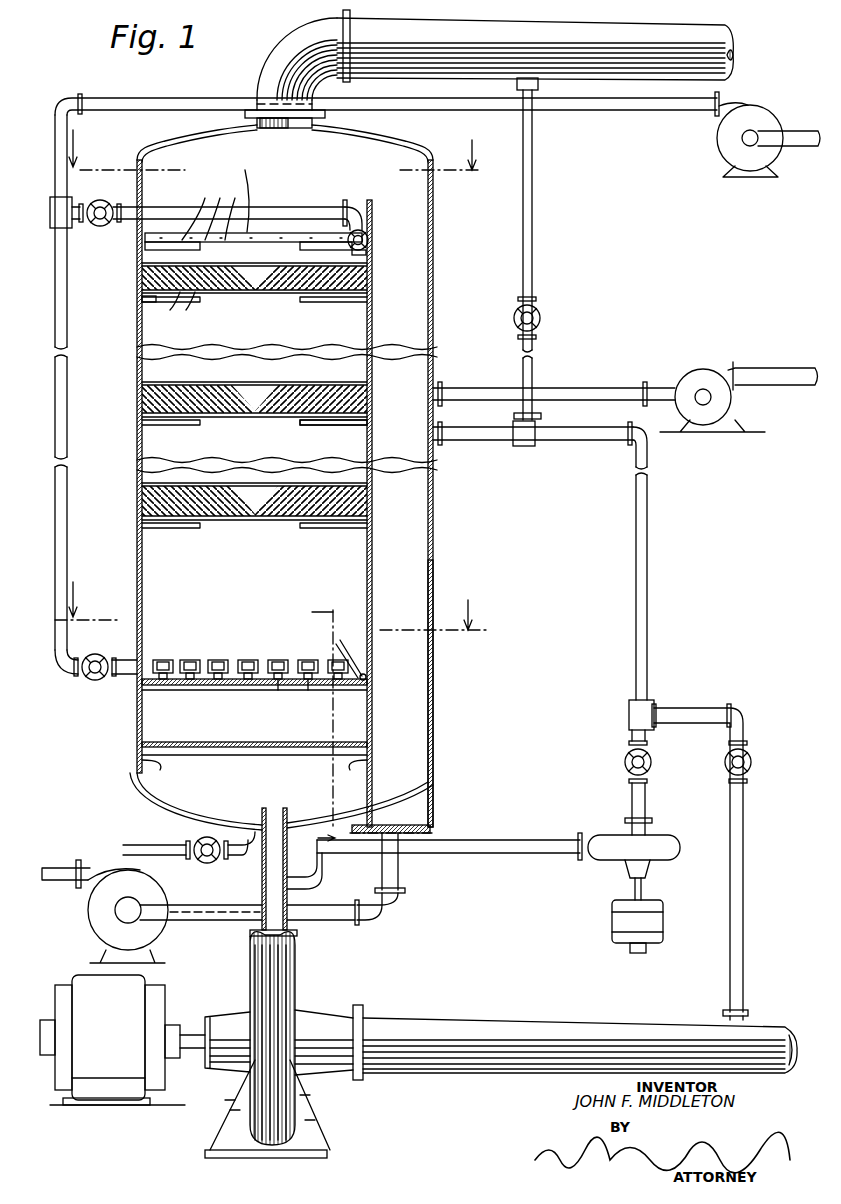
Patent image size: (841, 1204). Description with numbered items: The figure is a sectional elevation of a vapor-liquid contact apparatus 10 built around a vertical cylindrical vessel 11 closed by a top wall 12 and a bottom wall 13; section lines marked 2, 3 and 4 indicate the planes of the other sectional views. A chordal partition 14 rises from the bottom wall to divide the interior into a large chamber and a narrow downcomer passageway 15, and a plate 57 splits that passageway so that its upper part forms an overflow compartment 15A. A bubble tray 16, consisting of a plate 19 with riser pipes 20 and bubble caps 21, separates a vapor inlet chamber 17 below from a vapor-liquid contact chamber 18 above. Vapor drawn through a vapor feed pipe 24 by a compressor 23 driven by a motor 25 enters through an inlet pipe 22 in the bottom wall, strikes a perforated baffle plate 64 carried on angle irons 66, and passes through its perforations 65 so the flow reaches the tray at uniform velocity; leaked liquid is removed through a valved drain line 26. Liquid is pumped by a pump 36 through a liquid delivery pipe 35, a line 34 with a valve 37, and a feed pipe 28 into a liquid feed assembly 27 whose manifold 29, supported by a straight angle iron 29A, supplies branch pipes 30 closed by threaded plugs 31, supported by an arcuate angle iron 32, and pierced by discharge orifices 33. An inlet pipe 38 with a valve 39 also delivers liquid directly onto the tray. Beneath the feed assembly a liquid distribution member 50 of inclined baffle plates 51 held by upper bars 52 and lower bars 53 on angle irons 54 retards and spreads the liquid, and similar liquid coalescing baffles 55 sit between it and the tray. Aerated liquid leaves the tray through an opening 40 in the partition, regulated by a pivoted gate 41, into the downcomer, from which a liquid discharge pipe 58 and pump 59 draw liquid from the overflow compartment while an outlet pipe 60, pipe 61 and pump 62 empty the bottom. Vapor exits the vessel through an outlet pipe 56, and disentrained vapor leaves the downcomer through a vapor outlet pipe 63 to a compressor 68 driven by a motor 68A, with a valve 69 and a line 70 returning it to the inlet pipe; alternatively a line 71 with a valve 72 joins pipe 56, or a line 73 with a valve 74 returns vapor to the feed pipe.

The vapor-liquid contact apparatus 10 is at (586, 236).
The cylindrical shell or vessel 11 is at (435, 265).
The top wall 12 is at (385, 140).
The bottom wall 13 is at (160, 812).
The chordal wall or partition 14 is at (375, 548).
The downcomer passageway 15 is at (387, 513).
The overflow compartment 15A is at (400, 325).
The bubble tray 16 is at (209, 632).
The vapor inlet chamber 17 is at (254, 715).
The vapor-liquid contact chamber 18 is at (254, 432).
The plate 19 is at (205, 690).
The riser pipes 20 is at (310, 692).
The bubble caps 21 is at (276, 660).
The vapor inlet pipe 22 is at (292, 812).
The compressor 23 is at (295, 1000).
The vapor feed pipe 24 is at (500, 1022).
The motor 25 is at (165, 1090).
The valved drain line 26 is at (162, 845).
The liquid feed assembly 27 is at (332, 190).
The feed pipe 28 is at (262, 207).
The manifold 29 is at (372, 232).
The straight angle iron 29A is at (372, 250).
The branch pipes 30 is at (247, 189).
The threaded plugs 31 is at (145, 236).
The arcuate-shaped angle iron 32 is at (147, 246).
The discharge orifices 33 is at (208, 207).
The line 34 is at (82, 225).
The liquid delivery pipe 35 is at (205, 98).
The pump 36 is at (762, 118).
The valve 37 is at (104, 199).
The inlet pipe 38 is at (115, 680).
The valve 39 is at (96, 653).
The aerated liquid discharge opening 40 is at (372, 660).
The movable plate or gate 41 is at (340, 640).
The liquid distribution member 50 is at (254, 303).
The baffle plates 51 is at (180, 298).
The bars 52 is at (258, 266).
The bars 53 is at (206, 298).
The angle irons 54 is at (142, 300).
The liquid coalescing baffles 55 is at (205, 413).
The outlet pipe 56 is at (735, 50).
The plate 57 is at (365, 425).
The liquid discharge pipe 58 is at (474, 386).
The pump 59 is at (694, 372).
The outlet pipe 60 is at (430, 822).
The pipe 61 is at (400, 866).
The pump 62 is at (170, 886).
The vapor outlet pipe 63 is at (486, 442).
The baffle plate 64 is at (240, 757).
The perforations 65 is at (178, 745).
The angle irons 66 is at (142, 762).
The compressor 68 is at (665, 838).
The motor 68A is at (612, 920).
The valve 69 is at (615, 762).
The line 70 is at (510, 840).
The line 71 is at (536, 188).
The valve 72 is at (548, 318).
The line 73 is at (690, 708).
The valve 74 is at (758, 762).
The section line 2 is at (274, 141).
The section line 3 is at (272, 596).
The section line 4 is at (315, 725).